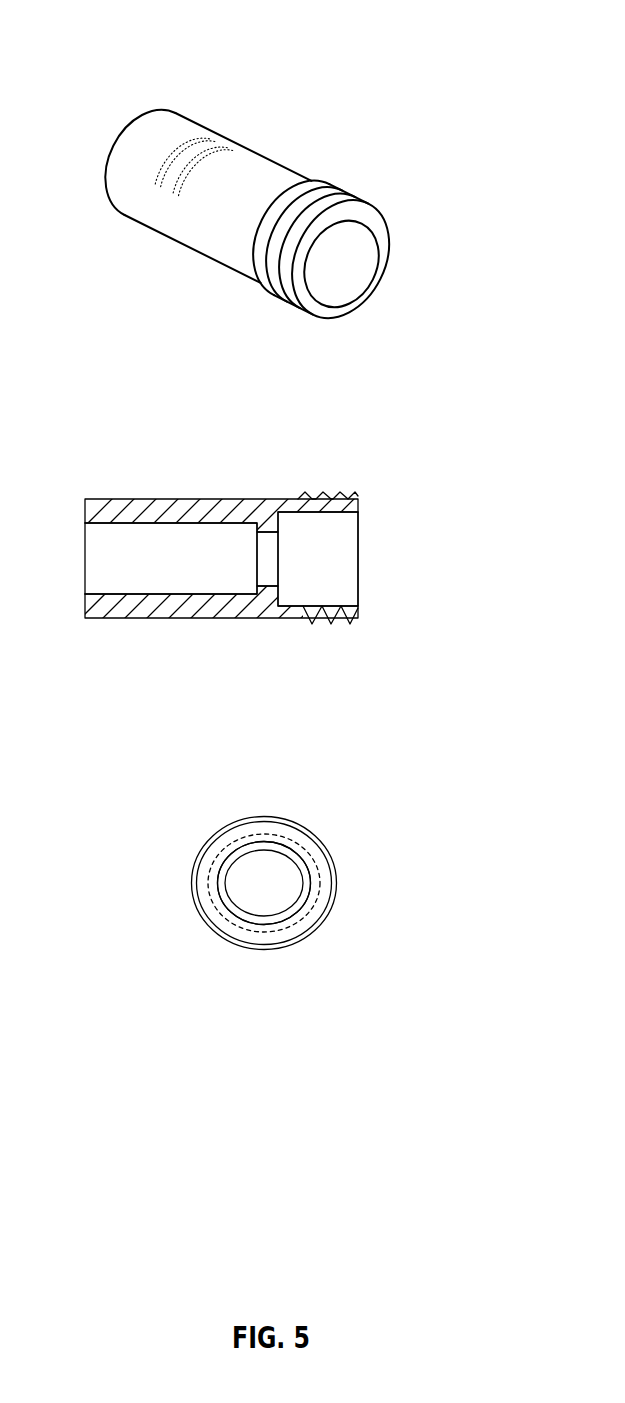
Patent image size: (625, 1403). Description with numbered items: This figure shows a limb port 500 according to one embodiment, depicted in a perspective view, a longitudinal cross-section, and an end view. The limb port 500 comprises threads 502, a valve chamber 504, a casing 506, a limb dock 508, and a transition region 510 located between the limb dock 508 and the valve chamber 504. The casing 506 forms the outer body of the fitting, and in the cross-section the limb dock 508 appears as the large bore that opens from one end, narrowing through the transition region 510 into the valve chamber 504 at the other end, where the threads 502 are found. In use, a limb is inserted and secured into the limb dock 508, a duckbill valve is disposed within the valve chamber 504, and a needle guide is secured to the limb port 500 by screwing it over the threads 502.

The limb port 500 is at (492, 82).
The threads 502 is at (325, 317).
The valve chamber 504 is at (302, 546).
The casing 506 is at (152, 507).
The limb dock 508 is at (130, 582).
The transition region 510 is at (270, 573).